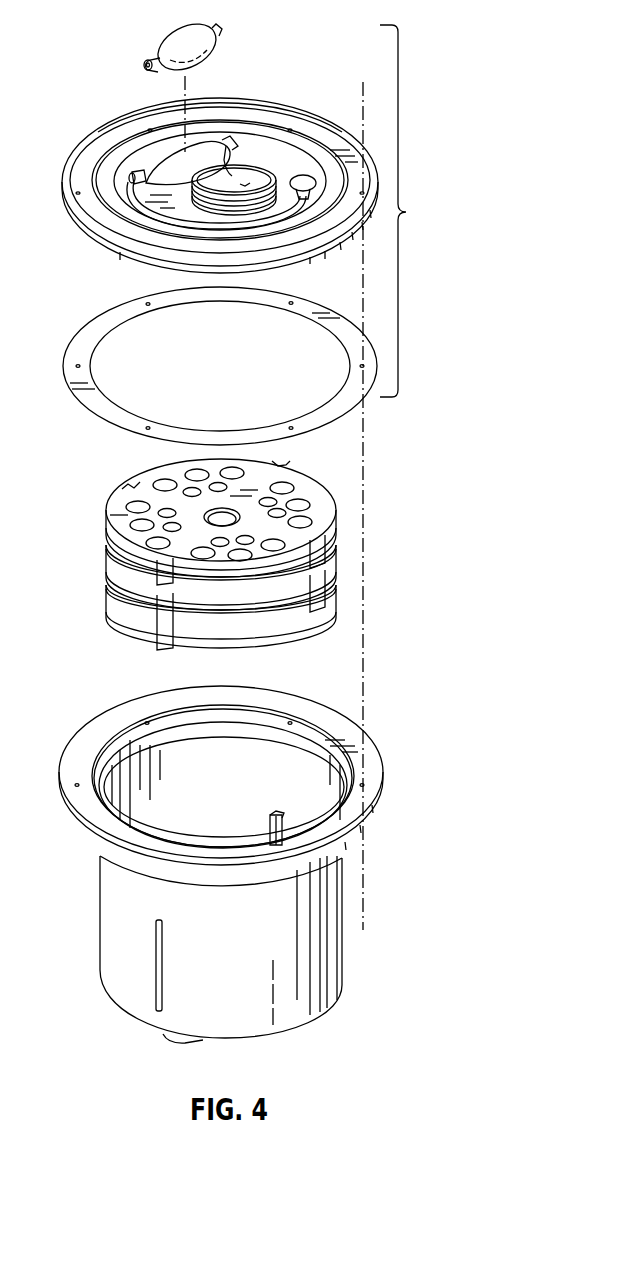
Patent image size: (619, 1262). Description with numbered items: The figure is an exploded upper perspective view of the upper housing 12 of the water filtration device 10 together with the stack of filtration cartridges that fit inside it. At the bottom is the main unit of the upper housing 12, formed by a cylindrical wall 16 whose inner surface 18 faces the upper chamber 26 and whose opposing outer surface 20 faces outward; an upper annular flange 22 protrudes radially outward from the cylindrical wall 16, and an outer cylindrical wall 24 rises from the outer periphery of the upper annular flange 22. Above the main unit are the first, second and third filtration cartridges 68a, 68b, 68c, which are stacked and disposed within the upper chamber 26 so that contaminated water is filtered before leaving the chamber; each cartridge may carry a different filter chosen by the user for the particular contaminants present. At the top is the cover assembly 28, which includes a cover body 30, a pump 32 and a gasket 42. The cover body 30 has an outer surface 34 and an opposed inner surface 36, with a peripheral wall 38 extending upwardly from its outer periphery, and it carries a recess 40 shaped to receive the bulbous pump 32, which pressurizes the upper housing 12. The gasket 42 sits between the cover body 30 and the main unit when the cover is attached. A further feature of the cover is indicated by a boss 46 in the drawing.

The water filtration device 10 is at (52, 42).
The upper housing 12 is at (350, 946).
The cylindrical wall 16 is at (100, 954).
The inner surface 18 is at (152, 760).
The outer surface 20 is at (110, 910).
The upper annular flange 22 is at (90, 748).
The outer cylindrical wall 24 is at (72, 810).
The upper chamber 26 is at (256, 766).
The cover assembly 28 is at (411, 211).
The cover body 30 is at (95, 155).
The pump 32 is at (180, 28).
The outer surface 34 is at (295, 160).
The inner surface 36 is at (6, 361).
The peripheral wall 38 is at (72, 216).
The recess 40 is at (175, 160).
The gasket 42 is at (92, 330).
The central port 46 is at (246, 186).
The first filtration cartridge 68a is at (108, 500).
The second filtration cartridge 68b is at (105, 547).
The third filtration cartridge 68c is at (105, 587).